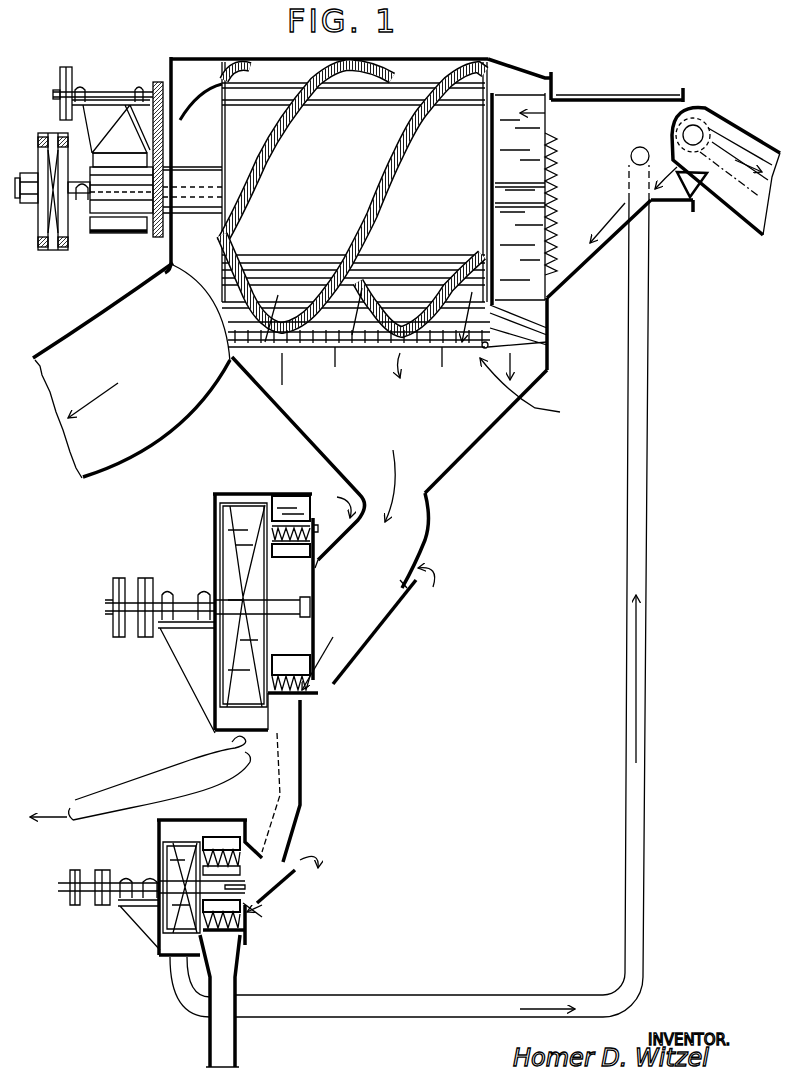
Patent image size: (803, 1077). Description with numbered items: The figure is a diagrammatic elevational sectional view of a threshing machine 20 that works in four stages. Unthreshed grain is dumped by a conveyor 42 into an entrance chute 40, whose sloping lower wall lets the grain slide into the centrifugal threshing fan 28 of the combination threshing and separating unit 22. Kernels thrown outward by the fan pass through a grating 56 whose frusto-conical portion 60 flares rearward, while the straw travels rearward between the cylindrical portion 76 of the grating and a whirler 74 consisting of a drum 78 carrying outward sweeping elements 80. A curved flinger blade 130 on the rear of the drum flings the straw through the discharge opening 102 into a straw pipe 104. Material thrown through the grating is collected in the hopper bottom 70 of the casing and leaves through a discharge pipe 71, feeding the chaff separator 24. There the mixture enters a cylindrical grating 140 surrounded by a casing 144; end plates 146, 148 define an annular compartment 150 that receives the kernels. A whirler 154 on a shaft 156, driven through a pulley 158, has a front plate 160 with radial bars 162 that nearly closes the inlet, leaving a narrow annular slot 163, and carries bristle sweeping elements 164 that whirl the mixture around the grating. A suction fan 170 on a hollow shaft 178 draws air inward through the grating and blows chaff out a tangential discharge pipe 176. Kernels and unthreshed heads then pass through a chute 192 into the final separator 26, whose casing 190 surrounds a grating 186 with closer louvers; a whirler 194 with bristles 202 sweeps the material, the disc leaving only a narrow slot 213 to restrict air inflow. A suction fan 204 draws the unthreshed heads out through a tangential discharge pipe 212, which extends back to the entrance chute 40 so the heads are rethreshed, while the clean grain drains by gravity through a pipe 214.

The threshing machine 20 is at (664, 51).
The combination threshing and separating unit 22 is at (535, 63).
The chaff separator 24 is at (212, 490).
The final separator 26 is at (231, 803).
The centrifugal threshing fan 28 is at (549, 291).
The entrance chute 40 is at (658, 206).
The conveyor 42 is at (747, 143).
The grating 56 is at (528, 393).
The frusto-conical portion 60 is at (530, 347).
The hopper bottom 70 is at (478, 452).
The discharge pipe 71 is at (430, 522).
The whirler 74 is at (416, 72).
The cylindrical portion of grating 76 is at (262, 363).
The drum 78 is at (293, 62).
The sweeping elements 80 is at (383, 221).
The discharge opening 102 is at (240, 268).
The straw pipe 104 is at (92, 322).
The flinger blade 130 is at (186, 116).
The grating 140 is at (290, 712).
The casing 144 is at (283, 497).
The front end plate 146 is at (320, 690).
The rear end plate 148 is at (317, 732).
The annular compartment 150 is at (295, 503).
The whirler 154 is at (323, 643).
The shaft 156 is at (293, 615).
The pulley 158 is at (118, 635).
The front plate 160 is at (312, 580).
The radial bars 162 is at (382, 618).
The annular slot 163 is at (325, 672).
The sweeping elements 164 is at (272, 538).
The suction fan 170 is at (262, 516).
The tangential discharge pipe 176 is at (187, 760).
The hollow shaft 178 is at (262, 618).
The grating 186 is at (234, 947).
The casing 190 is at (210, 820).
The chute 192 is at (296, 876).
The whirler 194 is at (263, 909).
The bristles 202 is at (197, 913).
The suction fan 204 is at (180, 853).
The tangential discharge pipe 212 is at (167, 970).
The annular slot 213 is at (260, 917).
The grain pipe 214 is at (236, 1050).